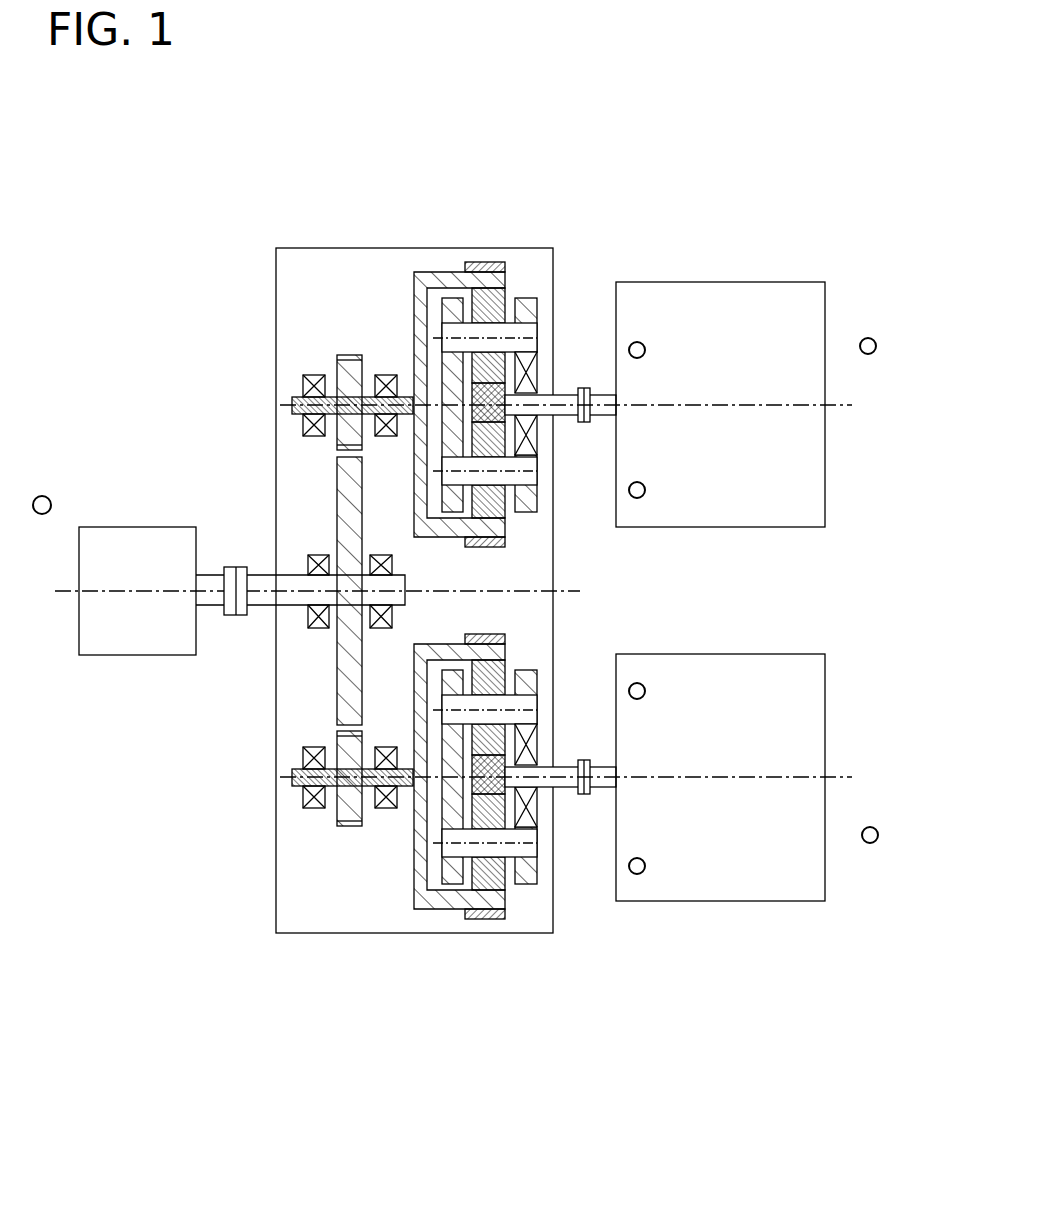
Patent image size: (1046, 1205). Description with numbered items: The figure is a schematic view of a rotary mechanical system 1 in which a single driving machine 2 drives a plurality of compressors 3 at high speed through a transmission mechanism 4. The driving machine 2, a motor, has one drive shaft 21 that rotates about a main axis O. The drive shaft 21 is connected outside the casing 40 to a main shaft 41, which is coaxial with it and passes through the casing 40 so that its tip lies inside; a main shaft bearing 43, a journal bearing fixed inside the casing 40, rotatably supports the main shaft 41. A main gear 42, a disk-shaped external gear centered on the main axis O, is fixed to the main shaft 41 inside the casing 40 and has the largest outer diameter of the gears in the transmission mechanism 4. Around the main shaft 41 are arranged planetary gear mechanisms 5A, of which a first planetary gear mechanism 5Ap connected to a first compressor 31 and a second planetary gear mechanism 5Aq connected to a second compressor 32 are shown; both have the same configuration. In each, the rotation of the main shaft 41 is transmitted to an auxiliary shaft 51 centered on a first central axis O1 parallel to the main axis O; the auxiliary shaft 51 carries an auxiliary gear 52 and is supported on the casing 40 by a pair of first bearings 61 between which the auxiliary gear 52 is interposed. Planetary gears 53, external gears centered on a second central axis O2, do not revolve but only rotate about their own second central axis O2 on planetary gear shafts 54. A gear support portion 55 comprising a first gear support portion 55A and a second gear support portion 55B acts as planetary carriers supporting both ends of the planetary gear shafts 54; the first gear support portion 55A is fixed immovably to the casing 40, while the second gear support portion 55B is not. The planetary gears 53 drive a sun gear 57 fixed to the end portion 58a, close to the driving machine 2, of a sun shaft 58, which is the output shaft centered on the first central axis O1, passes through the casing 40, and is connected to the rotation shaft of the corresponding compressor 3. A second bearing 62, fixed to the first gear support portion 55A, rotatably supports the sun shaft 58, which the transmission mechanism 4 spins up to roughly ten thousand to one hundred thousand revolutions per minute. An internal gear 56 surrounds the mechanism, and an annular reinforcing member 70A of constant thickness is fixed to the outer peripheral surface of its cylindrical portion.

The rotary mechanical system 1 is at (708, 176).
The driving machine 2 is at (87, 524).
The compressors 3 is at (744, 594).
The first compressor 31 is at (803, 277).
The second compressor 32 is at (805, 908).
The transmission mechanism 4 is at (313, 244).
The casing 40 is at (276, 248).
The main shaft 41 is at (260, 576).
The main gear 42 is at (345, 657).
The main shaft bearing 43 is at (378, 555).
The drive shaft 21 is at (215, 614).
The planetary gear mechanism 5A is at (246, 593).
The first planetary gear mechanism 5Ap is at (369, 300).
The second planetary gear mechanism 5Aq is at (369, 882).
The auxiliary shaft 51 is at (300, 398).
The auxiliary gear 52 is at (339, 360).
The planetary gears 53 is at (504, 289).
The planetary gear shafts 54 is at (540, 335).
The gear support portion 55 is at (551, 592).
The first gear support portion 55A is at (528, 298).
The second gear support portion 55B is at (446, 298).
The internal gear 56 is at (414, 260).
The sun gear 57 is at (473, 395).
The sun shaft 58 is at (567, 395).
The end portion 58a is at (590, 415).
The first bearing 61 is at (385, 436).
The second bearing 62 is at (538, 428).
The reinforcing member 70A is at (482, 262).
The main axis O is at (68, 590).
The first central axis O1 is at (852, 405).
The second central axis O2 is at (540, 338).